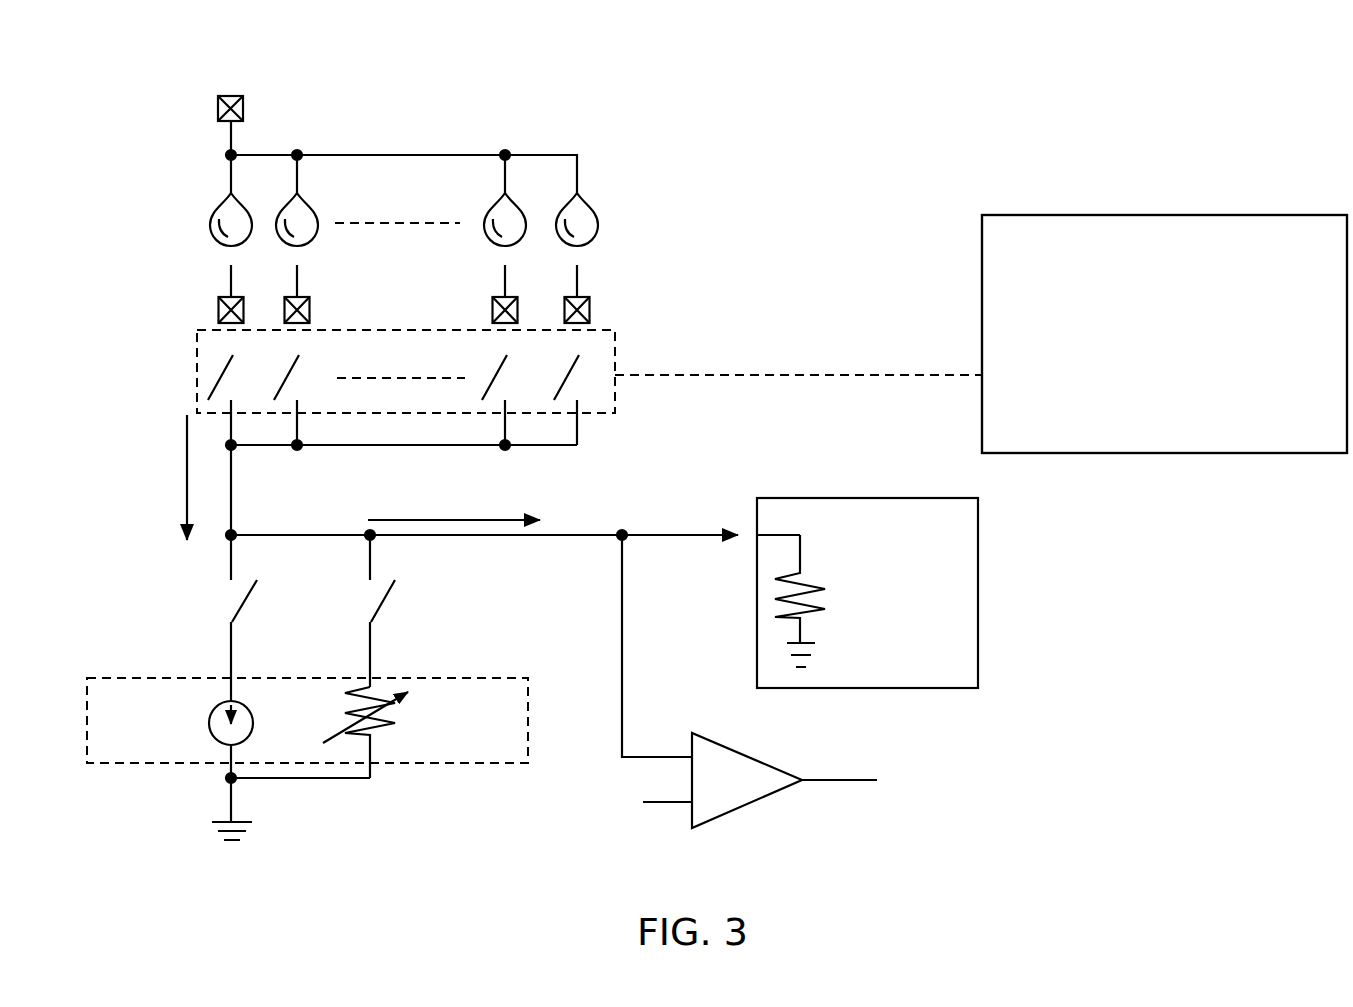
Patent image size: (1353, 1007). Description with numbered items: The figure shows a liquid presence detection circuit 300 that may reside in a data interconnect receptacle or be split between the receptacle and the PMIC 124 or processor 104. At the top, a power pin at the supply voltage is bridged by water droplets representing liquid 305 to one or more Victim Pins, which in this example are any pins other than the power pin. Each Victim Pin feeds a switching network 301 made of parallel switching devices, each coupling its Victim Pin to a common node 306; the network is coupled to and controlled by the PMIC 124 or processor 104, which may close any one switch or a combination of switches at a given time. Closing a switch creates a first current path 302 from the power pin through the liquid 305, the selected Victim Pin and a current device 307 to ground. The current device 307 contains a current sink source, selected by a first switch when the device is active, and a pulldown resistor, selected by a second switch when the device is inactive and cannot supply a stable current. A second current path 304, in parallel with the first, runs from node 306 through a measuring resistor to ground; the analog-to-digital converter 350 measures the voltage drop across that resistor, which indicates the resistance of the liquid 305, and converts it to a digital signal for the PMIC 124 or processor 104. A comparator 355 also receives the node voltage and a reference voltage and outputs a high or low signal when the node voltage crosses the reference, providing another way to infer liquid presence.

The liquid presence detection circuit 300 is at (1205, 66).
The switching network 301 is at (620, 333).
The current path 302 is at (187, 493).
The second current path 304 is at (475, 520).
The liquid 305 is at (209, 206).
The node 306 is at (596, 524).
The current device 307 is at (93, 672).
The analog-to-digital converter 350 is at (820, 593).
The comparator 355 is at (734, 786).
The PMIC 124 is at (1164, 334).
The processor 104 is at (1164, 334).